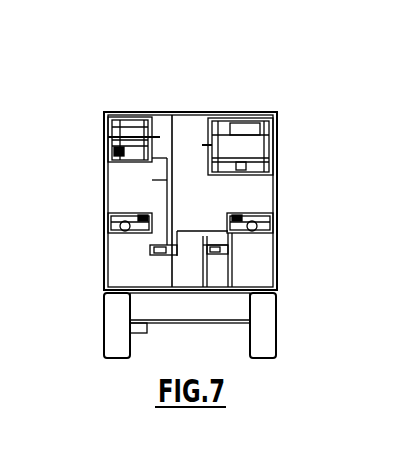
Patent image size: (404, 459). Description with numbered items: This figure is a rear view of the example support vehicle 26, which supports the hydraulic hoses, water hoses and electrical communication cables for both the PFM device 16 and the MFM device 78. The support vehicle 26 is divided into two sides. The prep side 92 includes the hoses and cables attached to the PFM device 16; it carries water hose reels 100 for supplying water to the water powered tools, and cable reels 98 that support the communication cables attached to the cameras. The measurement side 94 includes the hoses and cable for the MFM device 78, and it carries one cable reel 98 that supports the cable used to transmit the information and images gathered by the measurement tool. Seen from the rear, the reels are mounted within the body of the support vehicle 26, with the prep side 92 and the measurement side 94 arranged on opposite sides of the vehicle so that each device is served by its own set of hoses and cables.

The support vehicle 26 is at (280, 92).
The measurement side 94 is at (88, 200).
The prep side 92 is at (298, 180).
The cable reel 98 is at (108, 136).
The water hose reel 100 is at (277, 145).
The MFM device 78 is at (108, 237).
The PFM device 16 is at (277, 228).